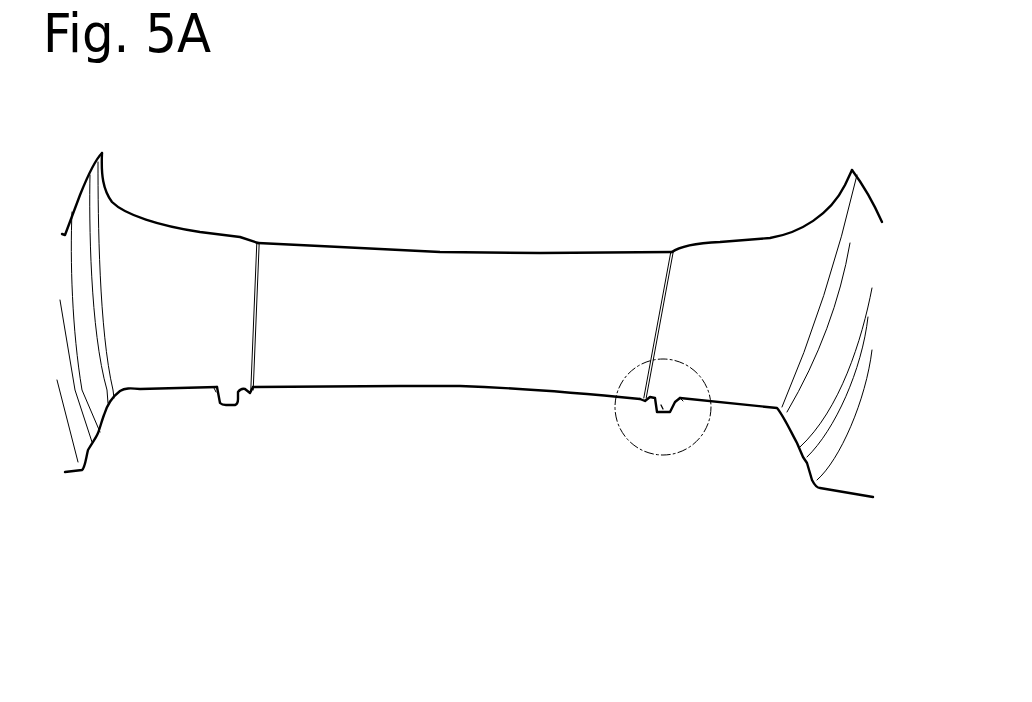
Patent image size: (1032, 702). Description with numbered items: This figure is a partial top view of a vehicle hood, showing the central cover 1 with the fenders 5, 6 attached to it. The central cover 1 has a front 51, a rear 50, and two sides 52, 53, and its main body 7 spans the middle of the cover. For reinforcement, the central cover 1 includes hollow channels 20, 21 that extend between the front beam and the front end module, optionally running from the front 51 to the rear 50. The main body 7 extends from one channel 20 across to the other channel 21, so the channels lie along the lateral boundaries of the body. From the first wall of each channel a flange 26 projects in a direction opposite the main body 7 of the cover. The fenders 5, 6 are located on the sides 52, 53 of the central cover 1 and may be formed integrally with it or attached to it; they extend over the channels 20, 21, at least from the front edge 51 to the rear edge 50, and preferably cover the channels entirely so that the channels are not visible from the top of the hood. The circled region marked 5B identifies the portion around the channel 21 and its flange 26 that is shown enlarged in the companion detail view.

The trim panel 1 is at (473, 342).
The left side portion 5 is at (77, 215).
The right side portion 6 is at (860, 212).
The central portion 7 is at (463, 311).
The upper edge 50 is at (535, 251).
The lower edge 51 is at (458, 390).
The right connecting line 52 is at (672, 243).
The left connecting line 53 is at (257, 241).
The first attachment clip 20 is at (233, 405).
The second attachment clip 21 is at (662, 413).
The fastening hook 26 is at (216, 390).
The detail region of FIG. 5B is at (678, 452).